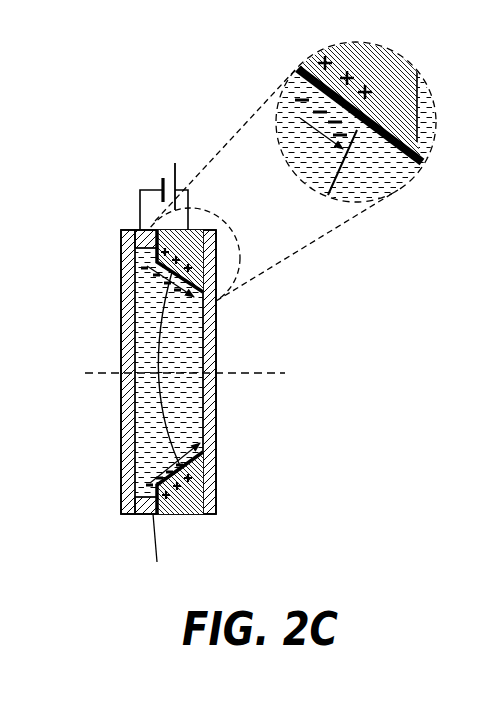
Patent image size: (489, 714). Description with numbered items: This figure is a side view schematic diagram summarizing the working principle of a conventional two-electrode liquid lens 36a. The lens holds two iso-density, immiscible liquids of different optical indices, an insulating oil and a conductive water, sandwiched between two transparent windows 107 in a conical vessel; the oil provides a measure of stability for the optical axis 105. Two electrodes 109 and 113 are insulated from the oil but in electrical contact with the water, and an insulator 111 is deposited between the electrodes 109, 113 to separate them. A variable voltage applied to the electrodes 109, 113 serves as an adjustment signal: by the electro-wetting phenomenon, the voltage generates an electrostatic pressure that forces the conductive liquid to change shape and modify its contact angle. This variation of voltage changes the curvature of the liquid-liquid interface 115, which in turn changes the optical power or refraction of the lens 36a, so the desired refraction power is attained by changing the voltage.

The liquid lens 36a is at (157, 375).
The optical axis 105 is at (92, 364).
The transparent window 107 is at (212, 515).
The electrode 109 is at (146, 515).
The insulator 111 is at (160, 514).
The electrode 113 is at (188, 514).
The interface 115 is at (190, 335).